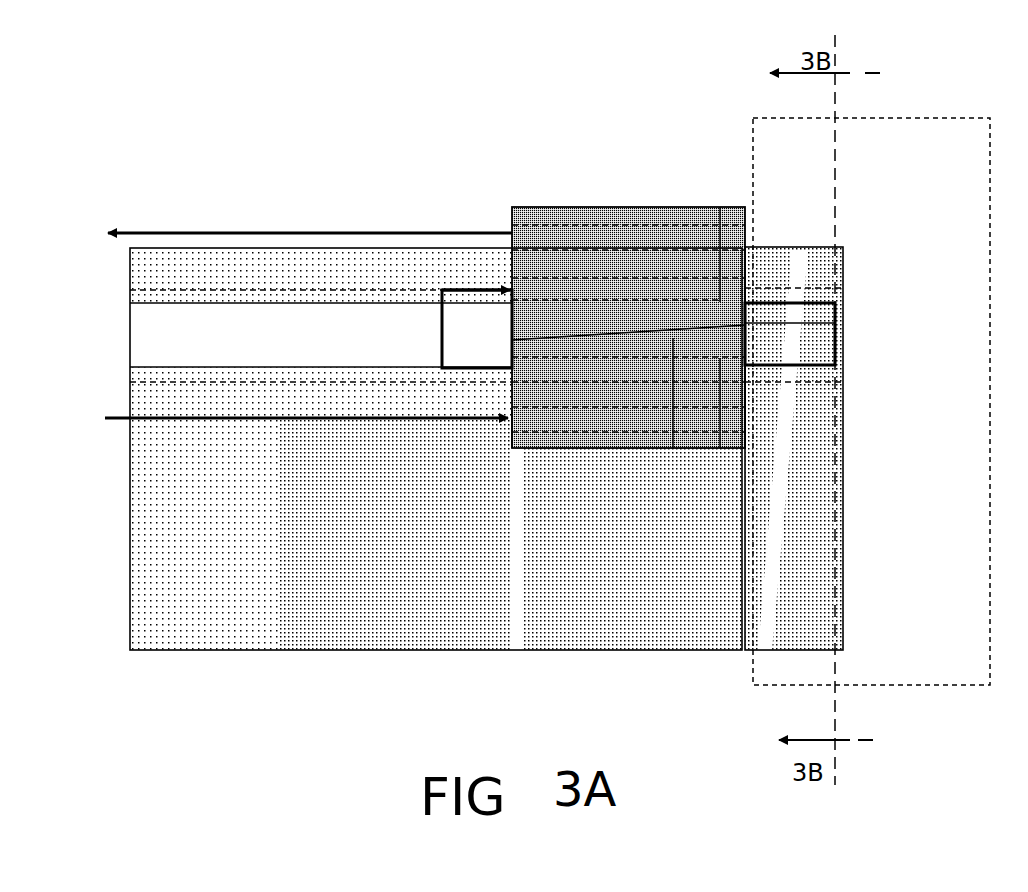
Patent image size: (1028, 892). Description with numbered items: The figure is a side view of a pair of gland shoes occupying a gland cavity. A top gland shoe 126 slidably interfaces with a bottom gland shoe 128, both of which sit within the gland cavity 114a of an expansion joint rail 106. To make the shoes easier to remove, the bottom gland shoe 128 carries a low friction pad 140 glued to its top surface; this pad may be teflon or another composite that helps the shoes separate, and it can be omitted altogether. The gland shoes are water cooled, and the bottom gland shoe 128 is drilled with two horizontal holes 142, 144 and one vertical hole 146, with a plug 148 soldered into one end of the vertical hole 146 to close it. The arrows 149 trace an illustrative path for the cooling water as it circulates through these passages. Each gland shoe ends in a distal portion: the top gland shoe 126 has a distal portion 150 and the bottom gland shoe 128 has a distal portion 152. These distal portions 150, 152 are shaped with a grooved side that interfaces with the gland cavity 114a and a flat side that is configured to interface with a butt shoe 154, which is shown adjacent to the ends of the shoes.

The expansion joint rail 106 is at (277, 614).
The gland cavity 114a is at (160, 332).
The top gland shoe 126 is at (625, 209).
The bottom gland shoe 128 is at (575, 450).
The low friction pad 140 is at (673, 448).
The horizontal hole 142 is at (508, 425).
The horizontal hole 144 is at (510, 364).
The vertical hole 146 is at (740, 413).
The plug 148 is at (745, 450).
The arrows 149 is at (383, 233).
The distal portion 150 is at (830, 285).
The distal portion 152 is at (818, 372).
The butt shoe 154 is at (945, 117).